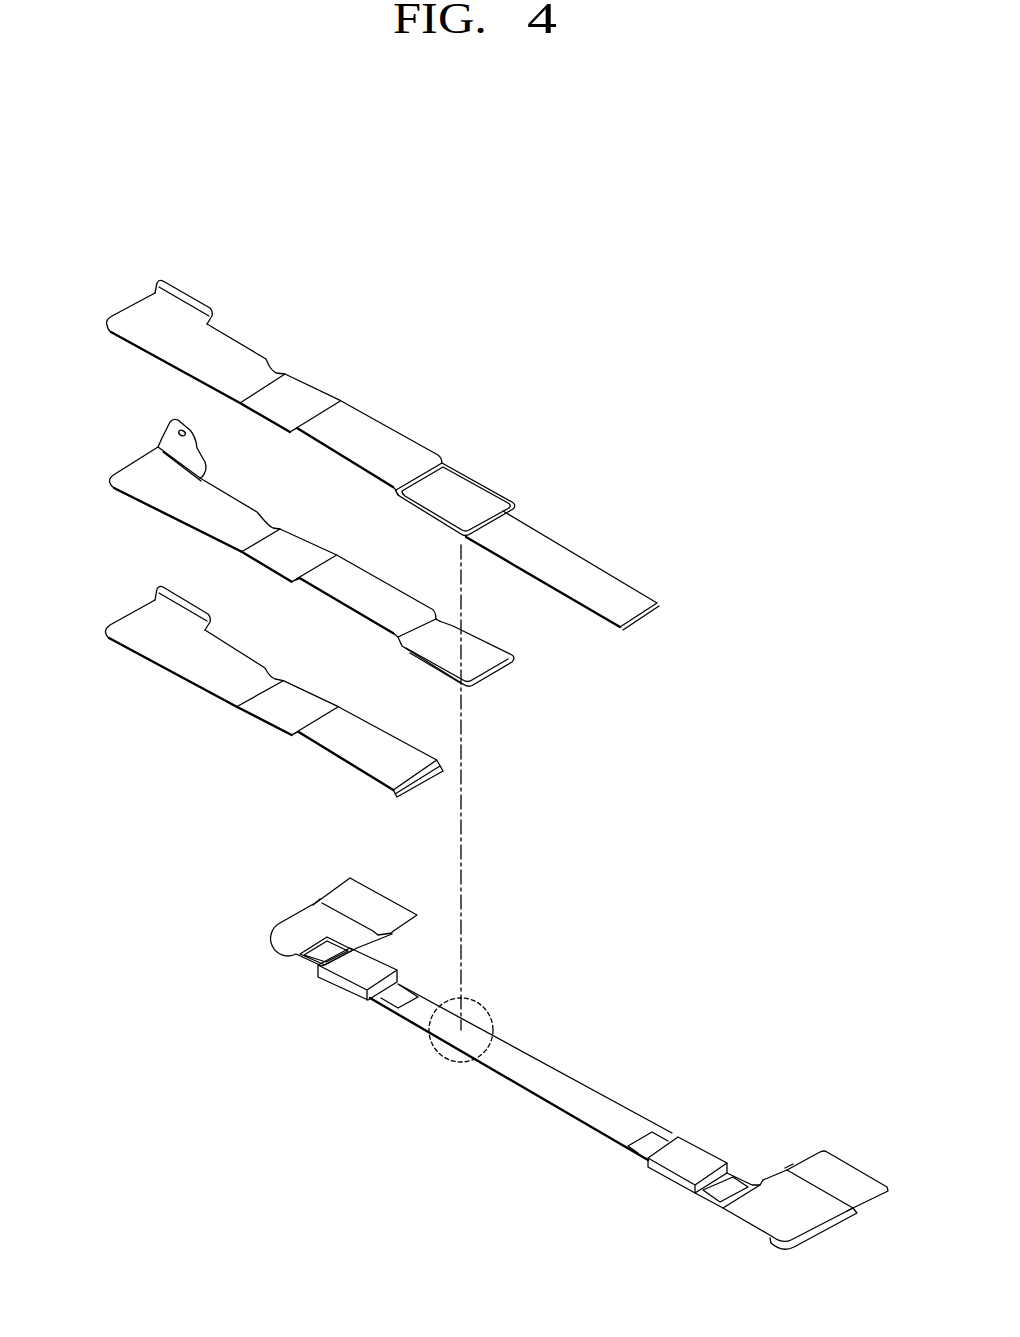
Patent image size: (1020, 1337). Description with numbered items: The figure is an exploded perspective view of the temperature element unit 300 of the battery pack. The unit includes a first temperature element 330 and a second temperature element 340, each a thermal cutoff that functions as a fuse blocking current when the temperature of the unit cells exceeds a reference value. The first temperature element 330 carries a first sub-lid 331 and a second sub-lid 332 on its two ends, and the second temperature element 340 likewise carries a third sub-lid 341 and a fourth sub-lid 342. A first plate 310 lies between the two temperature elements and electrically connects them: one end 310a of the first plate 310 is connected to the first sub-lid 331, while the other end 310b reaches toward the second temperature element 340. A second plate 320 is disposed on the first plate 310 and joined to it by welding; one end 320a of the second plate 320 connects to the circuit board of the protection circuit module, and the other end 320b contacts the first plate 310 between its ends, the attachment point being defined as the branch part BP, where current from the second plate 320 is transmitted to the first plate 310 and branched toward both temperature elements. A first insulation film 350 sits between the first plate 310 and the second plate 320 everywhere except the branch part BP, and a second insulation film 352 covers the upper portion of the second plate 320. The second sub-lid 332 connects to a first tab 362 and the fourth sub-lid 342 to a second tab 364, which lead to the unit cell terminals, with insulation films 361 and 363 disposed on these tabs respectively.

The temperature element unit 300 is at (637, 399).
The first plate 310 is at (520, 1070).
The one end of the first plate 310a is at (424, 980).
The other end of the first plate 310b is at (665, 1125).
The second plate 320 is at (185, 499).
The one end of the second plate 320a is at (125, 500).
The other end of the second plate 320b is at (477, 660).
The first temperature element 330 is at (353, 973).
The first sub-lid 331 is at (393, 998).
The second sub-lid 332 is at (315, 953).
The second temperature element 340 is at (680, 1162).
The third sub-lid 341 is at (643, 1147).
The fourth sub-lid 342 is at (717, 1190).
The first insulation film 350 is at (157, 647).
The second insulation film 352 is at (157, 337).
The insulation film 361 is at (283, 935).
The first tab 362 is at (342, 900).
The insulation film 363 is at (780, 1220).
The second tab 364 is at (841, 1174).
The branch part BP is at (492, 1018).